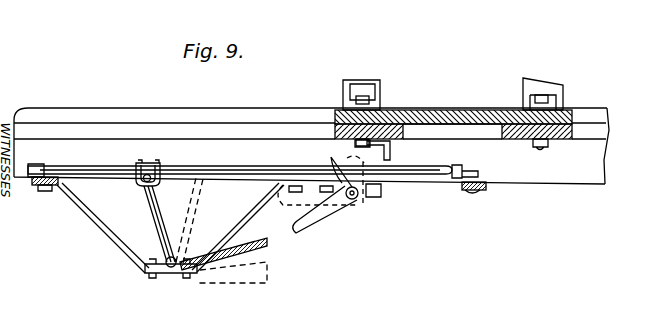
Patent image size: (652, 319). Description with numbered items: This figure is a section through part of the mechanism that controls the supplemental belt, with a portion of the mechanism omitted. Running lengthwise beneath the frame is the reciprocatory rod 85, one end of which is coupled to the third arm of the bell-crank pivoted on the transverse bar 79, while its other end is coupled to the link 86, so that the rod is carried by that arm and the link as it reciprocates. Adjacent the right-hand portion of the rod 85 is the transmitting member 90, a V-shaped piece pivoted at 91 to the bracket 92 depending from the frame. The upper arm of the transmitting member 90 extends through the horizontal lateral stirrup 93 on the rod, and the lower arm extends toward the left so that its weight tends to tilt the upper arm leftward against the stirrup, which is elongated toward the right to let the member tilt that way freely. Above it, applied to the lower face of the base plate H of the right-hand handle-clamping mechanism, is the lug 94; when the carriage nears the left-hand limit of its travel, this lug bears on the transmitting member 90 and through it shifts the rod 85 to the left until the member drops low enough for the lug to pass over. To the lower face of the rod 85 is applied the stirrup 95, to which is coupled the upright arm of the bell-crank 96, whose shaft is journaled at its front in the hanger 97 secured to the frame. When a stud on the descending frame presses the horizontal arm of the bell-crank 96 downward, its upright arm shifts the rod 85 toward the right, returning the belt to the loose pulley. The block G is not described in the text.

The transverse bar 79 is at (30, 182).
The reciprocatory rod 85 is at (92, 176).
The link 86 is at (466, 169).
The transmitting member 90 is at (318, 213).
The pivot 91 is at (356, 200).
The bracket 92 is at (382, 192).
The lateral stirrup 93 is at (333, 165).
The lug 94 is at (452, 143).
The stirrup 95 is at (160, 166).
The bell-crank 96 is at (242, 249).
The hanger 97 is at (147, 272).
The block G is at (453, 106).
The base plate H is at (381, 114).